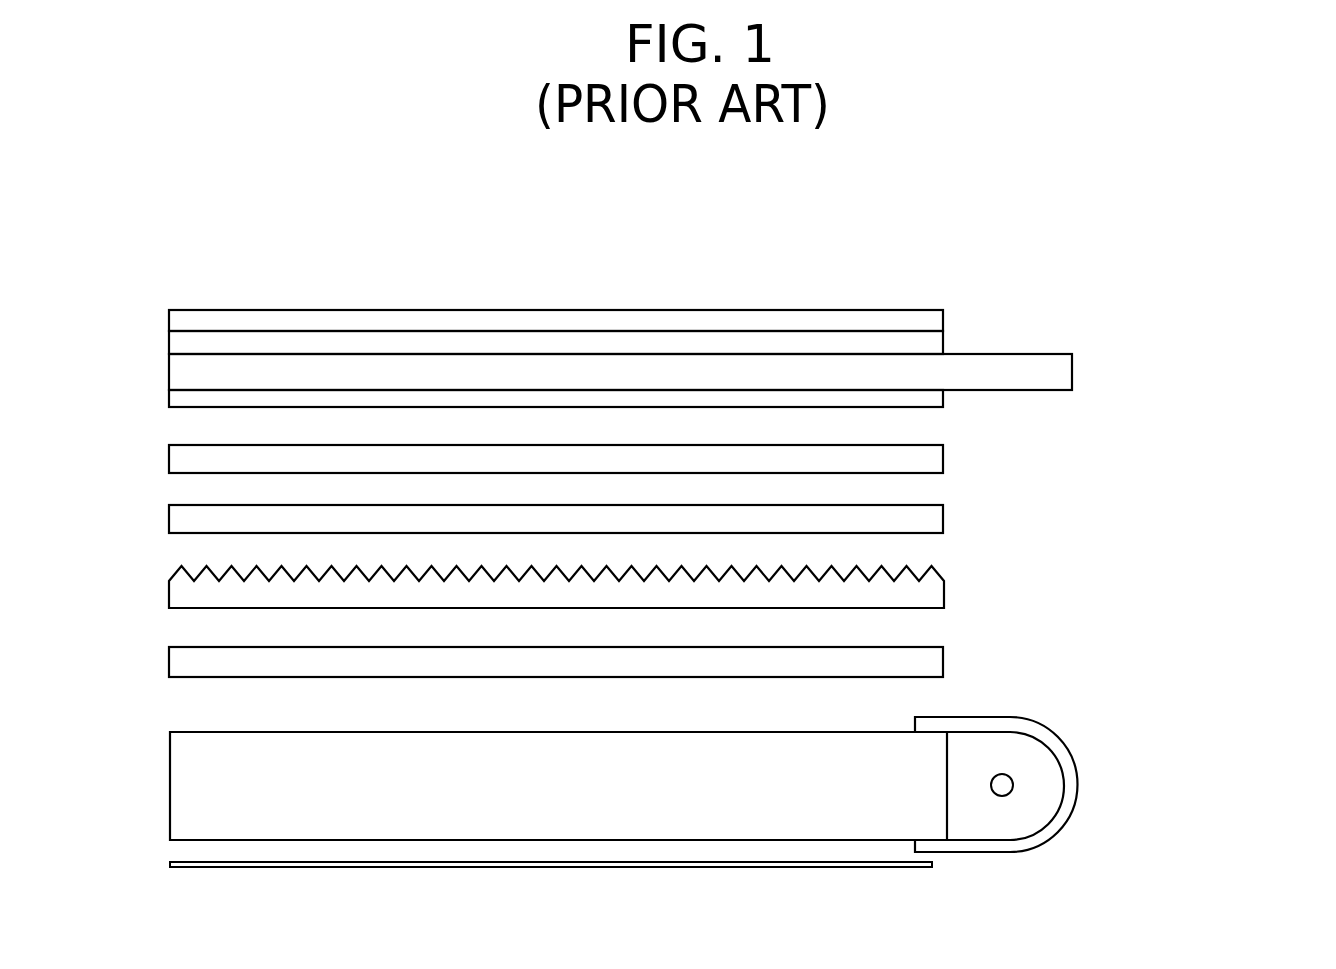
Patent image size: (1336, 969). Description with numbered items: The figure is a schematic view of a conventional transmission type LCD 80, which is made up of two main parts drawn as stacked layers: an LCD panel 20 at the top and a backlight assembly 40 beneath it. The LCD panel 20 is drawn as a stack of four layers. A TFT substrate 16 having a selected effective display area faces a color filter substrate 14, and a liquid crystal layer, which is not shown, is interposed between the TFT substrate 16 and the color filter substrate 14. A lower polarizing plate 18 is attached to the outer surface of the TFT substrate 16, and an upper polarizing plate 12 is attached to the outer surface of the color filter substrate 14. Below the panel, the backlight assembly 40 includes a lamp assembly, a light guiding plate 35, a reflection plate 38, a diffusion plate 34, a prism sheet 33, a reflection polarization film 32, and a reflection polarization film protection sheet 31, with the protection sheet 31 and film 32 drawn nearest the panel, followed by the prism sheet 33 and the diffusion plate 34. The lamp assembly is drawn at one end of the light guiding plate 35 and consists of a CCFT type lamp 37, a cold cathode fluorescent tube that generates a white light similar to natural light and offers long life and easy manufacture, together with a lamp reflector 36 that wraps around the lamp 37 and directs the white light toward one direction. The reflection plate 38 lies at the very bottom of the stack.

The upper polarizing plate 12 is at (943, 315).
The color filter substrate 14 is at (943, 340).
The TFT substrate 16 is at (1072, 370).
The lower polarizing plate 18 is at (943, 397).
The LCD panel 20 is at (1155, 306).
The reflection polarization film protection sheet 31 is at (945, 447).
The reflection polarization film 32 is at (945, 513).
The prism sheet 33 is at (945, 582).
The diffusion plate 34 is at (945, 660).
The light guiding plate 35 is at (892, 732).
The lamp reflector 36 is at (1065, 823).
The CCFT type lamp 37 is at (1013, 785).
The reflection plate 38 is at (932, 865).
The backlight assembly 40 is at (1165, 900).
The transmission type LCD 80 is at (1235, 357).